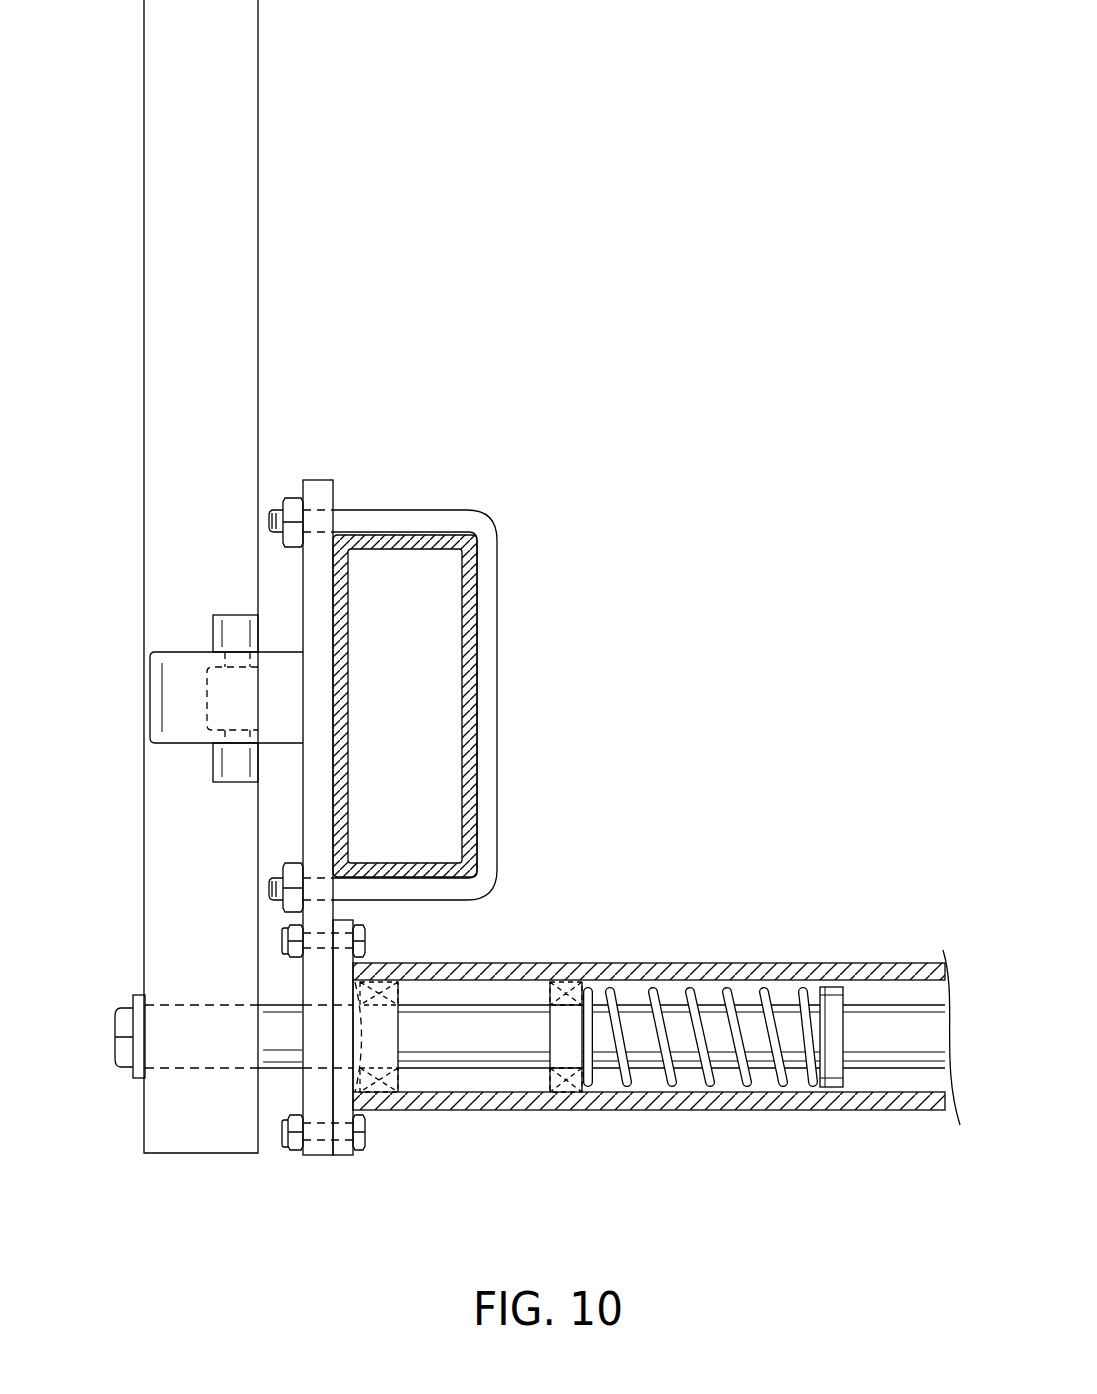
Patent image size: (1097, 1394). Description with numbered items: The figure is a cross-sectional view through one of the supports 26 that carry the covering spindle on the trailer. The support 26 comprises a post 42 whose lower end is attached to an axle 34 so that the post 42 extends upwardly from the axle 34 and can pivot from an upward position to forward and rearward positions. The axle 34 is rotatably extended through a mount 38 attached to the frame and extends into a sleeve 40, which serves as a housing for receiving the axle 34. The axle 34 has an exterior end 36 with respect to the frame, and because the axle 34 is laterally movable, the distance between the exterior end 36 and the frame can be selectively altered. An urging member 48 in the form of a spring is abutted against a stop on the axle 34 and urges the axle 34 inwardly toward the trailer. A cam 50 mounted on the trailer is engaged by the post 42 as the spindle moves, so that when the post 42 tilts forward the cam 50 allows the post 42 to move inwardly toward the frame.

The support 26 is at (270, 177).
The axle 34 is at (457, 1047).
The exterior end 36 is at (128, 1066).
The mount 38 is at (322, 1092).
The sleeve 40 is at (576, 970).
The post 42 is at (206, 313).
The urging member 48 is at (725, 1022).
The cam 50 is at (178, 696).